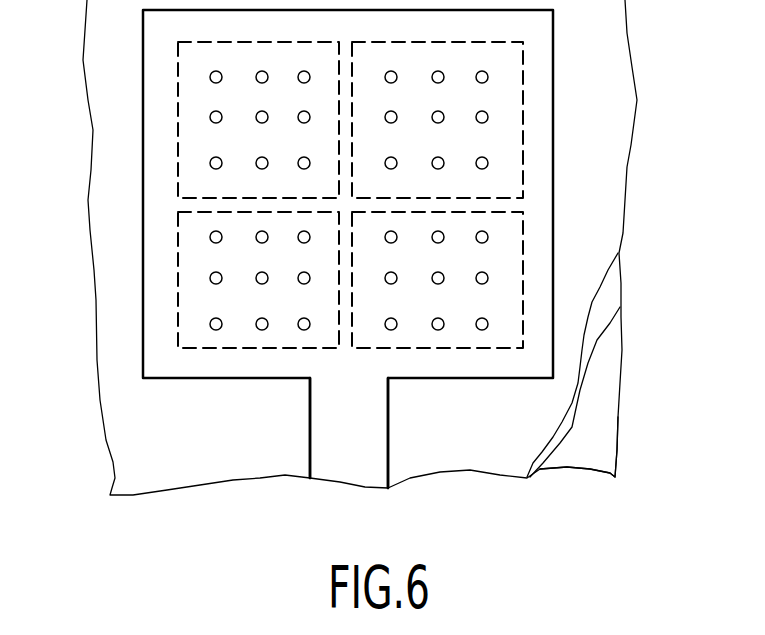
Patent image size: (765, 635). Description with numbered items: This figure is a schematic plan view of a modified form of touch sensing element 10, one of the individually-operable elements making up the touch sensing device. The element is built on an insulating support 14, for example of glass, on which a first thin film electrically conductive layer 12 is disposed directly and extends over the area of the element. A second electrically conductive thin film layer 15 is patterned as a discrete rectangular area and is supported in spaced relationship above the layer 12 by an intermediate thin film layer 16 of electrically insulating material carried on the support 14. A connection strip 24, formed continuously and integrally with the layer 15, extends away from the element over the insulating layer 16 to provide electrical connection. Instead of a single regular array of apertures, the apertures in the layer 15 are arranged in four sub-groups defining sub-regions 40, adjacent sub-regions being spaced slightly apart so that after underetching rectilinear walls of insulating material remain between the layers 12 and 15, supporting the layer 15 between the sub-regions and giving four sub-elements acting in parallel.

The touch sensing element 10 is at (172, 418).
The first thin film electrically conductive layer 12 is at (578, 390).
The insulating support 14 is at (593, 438).
The second electrically conductive thin film layer 15 is at (557, 55).
The intermediate thin film layer 16 is at (575, 298).
The connection strip 24 is at (388, 452).
The sub-region 40 is at (190, 100).